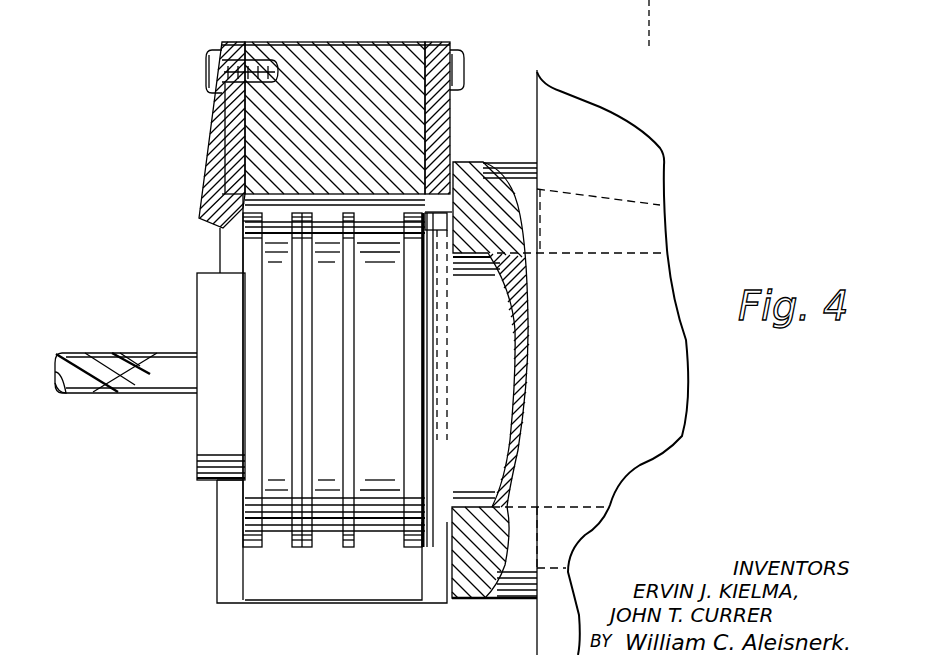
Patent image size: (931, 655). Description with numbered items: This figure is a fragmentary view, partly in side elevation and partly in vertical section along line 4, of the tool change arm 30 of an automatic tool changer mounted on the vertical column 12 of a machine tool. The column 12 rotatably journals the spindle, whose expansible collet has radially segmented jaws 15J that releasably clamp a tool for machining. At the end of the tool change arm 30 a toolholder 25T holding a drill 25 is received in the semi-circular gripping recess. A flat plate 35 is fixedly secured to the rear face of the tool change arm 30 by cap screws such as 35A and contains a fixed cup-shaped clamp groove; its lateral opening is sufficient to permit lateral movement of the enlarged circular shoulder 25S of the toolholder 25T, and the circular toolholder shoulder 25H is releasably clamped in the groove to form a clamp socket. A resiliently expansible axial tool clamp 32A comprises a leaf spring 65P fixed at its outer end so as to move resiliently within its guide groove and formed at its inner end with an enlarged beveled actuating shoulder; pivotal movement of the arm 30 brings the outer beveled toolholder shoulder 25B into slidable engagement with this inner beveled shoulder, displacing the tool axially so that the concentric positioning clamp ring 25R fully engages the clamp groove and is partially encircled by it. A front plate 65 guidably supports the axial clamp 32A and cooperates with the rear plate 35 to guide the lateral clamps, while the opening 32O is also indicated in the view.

The section line 4— 4 is at (652, 22).
The vertical column 12 is at (600, 142).
The radially segmented jaws 15J is at (580, 237).
The drill 25 is at (130, 388).
The outer beveled toolholder shoulder 25B is at (242, 236).
The circular toolholder shoulder 25H is at (408, 556).
The positioning clamp ring 25R is at (432, 381).
The enlarged circular shoulder 25S is at (438, 473).
The toolholder 25T is at (596, 326).
The tool change arm 30 is at (362, 56).
The axial tool clamp 32A is at (195, 196).
The gap opening 32O is at (424, 222).
The flat plate 35 is at (440, 128).
The cap screw 35A is at (466, 62).
The front plate 65 is at (242, 157).
The leaf spring 65P is at (223, 138).